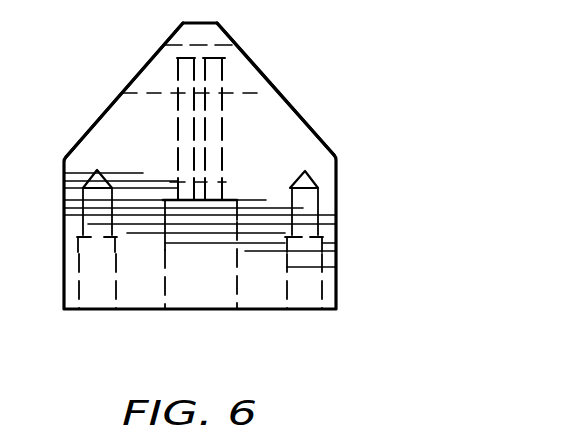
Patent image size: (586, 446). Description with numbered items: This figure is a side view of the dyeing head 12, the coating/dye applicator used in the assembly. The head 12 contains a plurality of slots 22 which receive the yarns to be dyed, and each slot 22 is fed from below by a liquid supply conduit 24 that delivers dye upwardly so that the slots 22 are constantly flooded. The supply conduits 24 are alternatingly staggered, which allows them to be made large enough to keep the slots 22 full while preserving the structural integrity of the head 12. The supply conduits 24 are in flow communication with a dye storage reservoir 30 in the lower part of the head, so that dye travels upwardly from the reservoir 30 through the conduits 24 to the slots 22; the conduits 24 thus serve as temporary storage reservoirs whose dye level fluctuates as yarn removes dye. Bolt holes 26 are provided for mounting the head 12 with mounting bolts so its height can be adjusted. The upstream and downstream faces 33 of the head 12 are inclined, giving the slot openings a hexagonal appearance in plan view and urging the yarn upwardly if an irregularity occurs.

The dyeing head 12 is at (404, 93).
The slots 22 is at (247, 78).
The liquid supply conduits 24 is at (178, 138).
The bolt holes 26 is at (90, 298).
The dye storage reservoir 30 is at (200, 304).
The upstream and downstream faces 33 is at (98, 118).